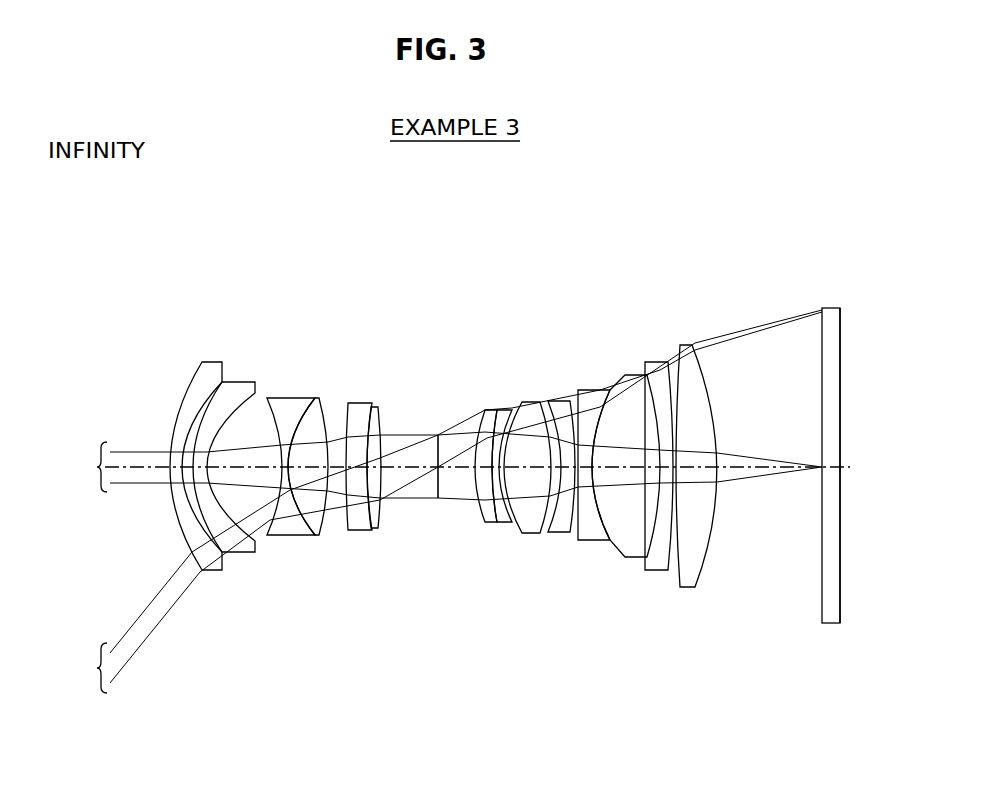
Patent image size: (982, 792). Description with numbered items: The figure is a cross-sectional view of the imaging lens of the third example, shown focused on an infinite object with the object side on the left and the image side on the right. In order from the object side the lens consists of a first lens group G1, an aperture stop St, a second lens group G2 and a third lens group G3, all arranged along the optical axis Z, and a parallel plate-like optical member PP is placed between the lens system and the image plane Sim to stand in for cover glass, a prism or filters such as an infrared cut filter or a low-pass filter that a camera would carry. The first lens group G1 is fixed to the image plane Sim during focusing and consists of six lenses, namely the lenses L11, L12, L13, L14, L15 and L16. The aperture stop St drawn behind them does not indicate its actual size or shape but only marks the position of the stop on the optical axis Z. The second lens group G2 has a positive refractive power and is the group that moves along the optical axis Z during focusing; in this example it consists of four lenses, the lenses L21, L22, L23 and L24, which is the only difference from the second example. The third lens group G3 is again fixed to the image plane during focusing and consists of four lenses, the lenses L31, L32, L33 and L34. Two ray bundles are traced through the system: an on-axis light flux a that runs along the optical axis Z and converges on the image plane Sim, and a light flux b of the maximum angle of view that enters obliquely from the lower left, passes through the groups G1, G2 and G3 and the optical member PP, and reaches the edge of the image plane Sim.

The lens L11 is at (210, 355).
The lens L12 is at (242, 377).
The lens L13 is at (287, 397).
The lens L14 is at (312, 397).
The lens L15 is at (360, 400).
The lens L16 is at (378, 402).
The lens L21 is at (485, 408).
The lens L22 is at (500, 409).
The lens L23 is at (528, 401).
The lens L24 is at (557, 400).
The lens L31 is at (590, 389).
The lens L32 is at (632, 374).
The lens L33 is at (658, 361).
The lens L34 is at (688, 344).
The first lens group G1 is at (403, 213).
The second lens group G2 is at (560, 213).
The third lens group G3 is at (727, 213).
The aperture stop St is at (438, 434).
The optical member PP is at (832, 613).
The image plane Sim is at (842, 602).
The optical axis Z is at (137, 462).
The on-axis light flux a is at (447, 466).
The light flux of the maximum angle of view b is at (448, 501).